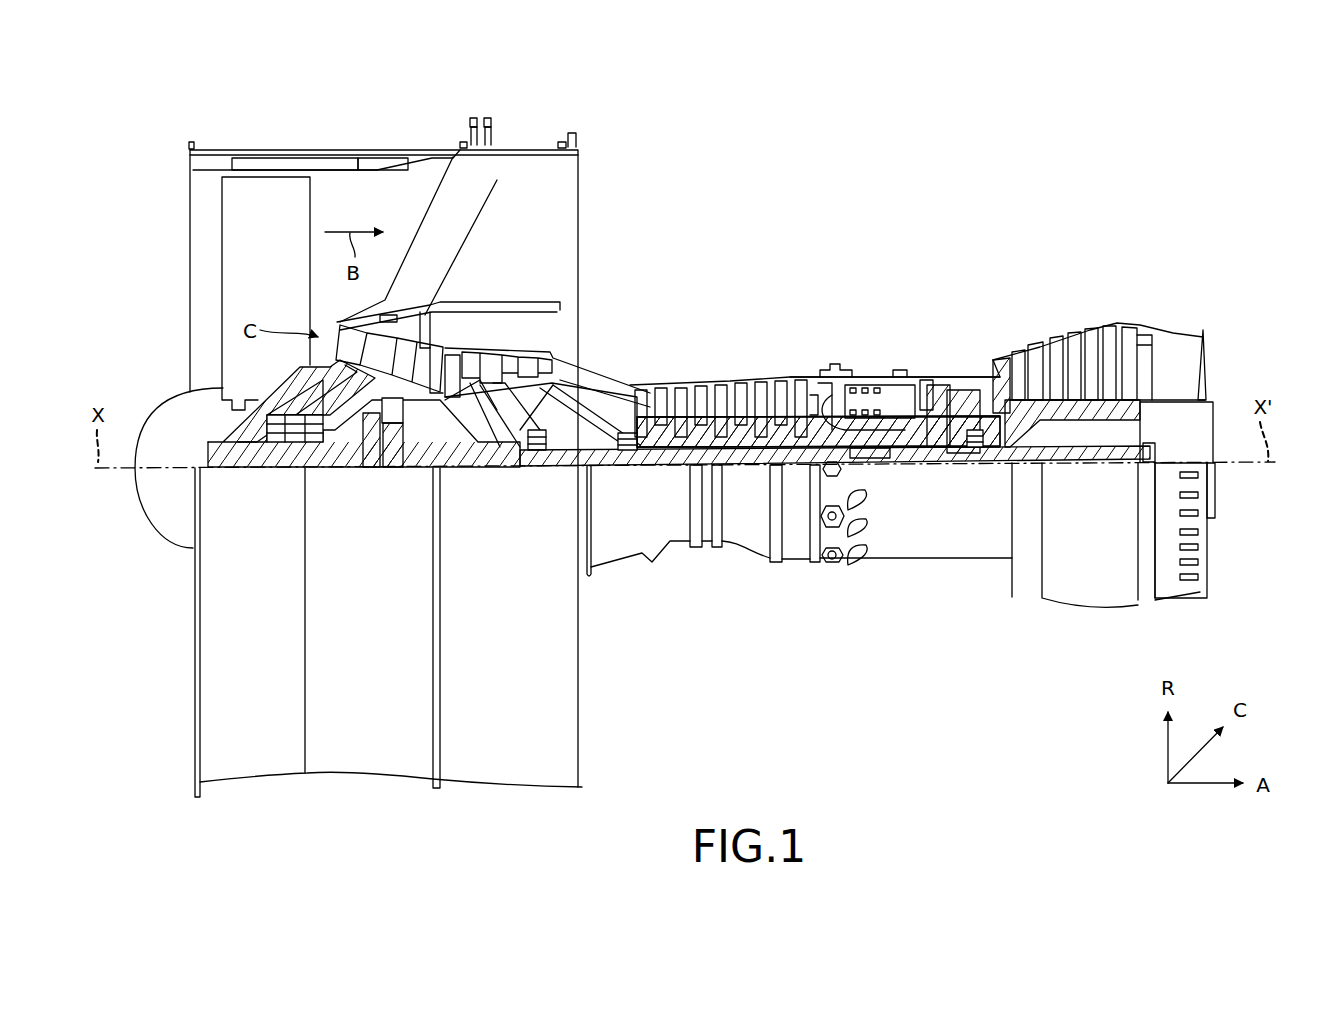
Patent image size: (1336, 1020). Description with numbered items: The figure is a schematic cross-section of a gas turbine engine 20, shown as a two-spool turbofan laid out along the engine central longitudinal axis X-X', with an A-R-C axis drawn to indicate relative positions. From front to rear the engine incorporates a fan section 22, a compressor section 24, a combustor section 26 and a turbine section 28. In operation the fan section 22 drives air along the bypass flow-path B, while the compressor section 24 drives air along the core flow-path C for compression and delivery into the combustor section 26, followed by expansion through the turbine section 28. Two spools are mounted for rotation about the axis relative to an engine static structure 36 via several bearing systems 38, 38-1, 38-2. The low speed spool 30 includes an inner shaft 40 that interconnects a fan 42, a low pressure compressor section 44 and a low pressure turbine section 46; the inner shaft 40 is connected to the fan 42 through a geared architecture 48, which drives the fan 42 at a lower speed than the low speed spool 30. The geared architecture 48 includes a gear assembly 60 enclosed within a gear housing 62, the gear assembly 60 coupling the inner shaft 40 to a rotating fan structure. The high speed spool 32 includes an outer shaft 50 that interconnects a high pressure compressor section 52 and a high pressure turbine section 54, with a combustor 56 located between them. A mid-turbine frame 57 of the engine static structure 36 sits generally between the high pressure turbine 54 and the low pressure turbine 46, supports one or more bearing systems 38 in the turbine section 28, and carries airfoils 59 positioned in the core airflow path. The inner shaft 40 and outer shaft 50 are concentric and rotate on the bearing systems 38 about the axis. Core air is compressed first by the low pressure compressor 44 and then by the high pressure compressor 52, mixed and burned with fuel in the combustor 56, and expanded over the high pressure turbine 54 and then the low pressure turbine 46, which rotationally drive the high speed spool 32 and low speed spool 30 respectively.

The gas turbine engine 20 is at (928, 180).
The fan section 22 is at (428, 126).
The compressor section 24 is at (438, 259).
The combustor section 26 is at (925, 259).
The turbine section 28 is at (1140, 259).
The low speed spool 30 is at (752, 500).
The high speed spool 32 is at (790, 428).
The engine static structure 36 is at (178, 786).
The bearing system 38 is at (980, 465).
The bearing system 38-1 is at (272, 448).
The bearing system 38-2 is at (535, 455).
The inner shaft 40 is at (603, 466).
The fan 42 is at (252, 276).
The low pressure compressor section 44 is at (510, 362).
The low pressure turbine section 46 is at (1075, 345).
The geared architecture 48 is at (400, 484).
The outer shaft 50 is at (866, 444).
The high pressure compressor section 52 is at (748, 392).
The high pressure turbine section 54 is at (940, 378).
The combustor 56 is at (868, 400).
The mid-turbine frame 57 is at (985, 388).
The airfoils 59 is at (995, 380).
The gear assembly 60 is at (400, 443).
The gear housing 62 is at (397, 407).